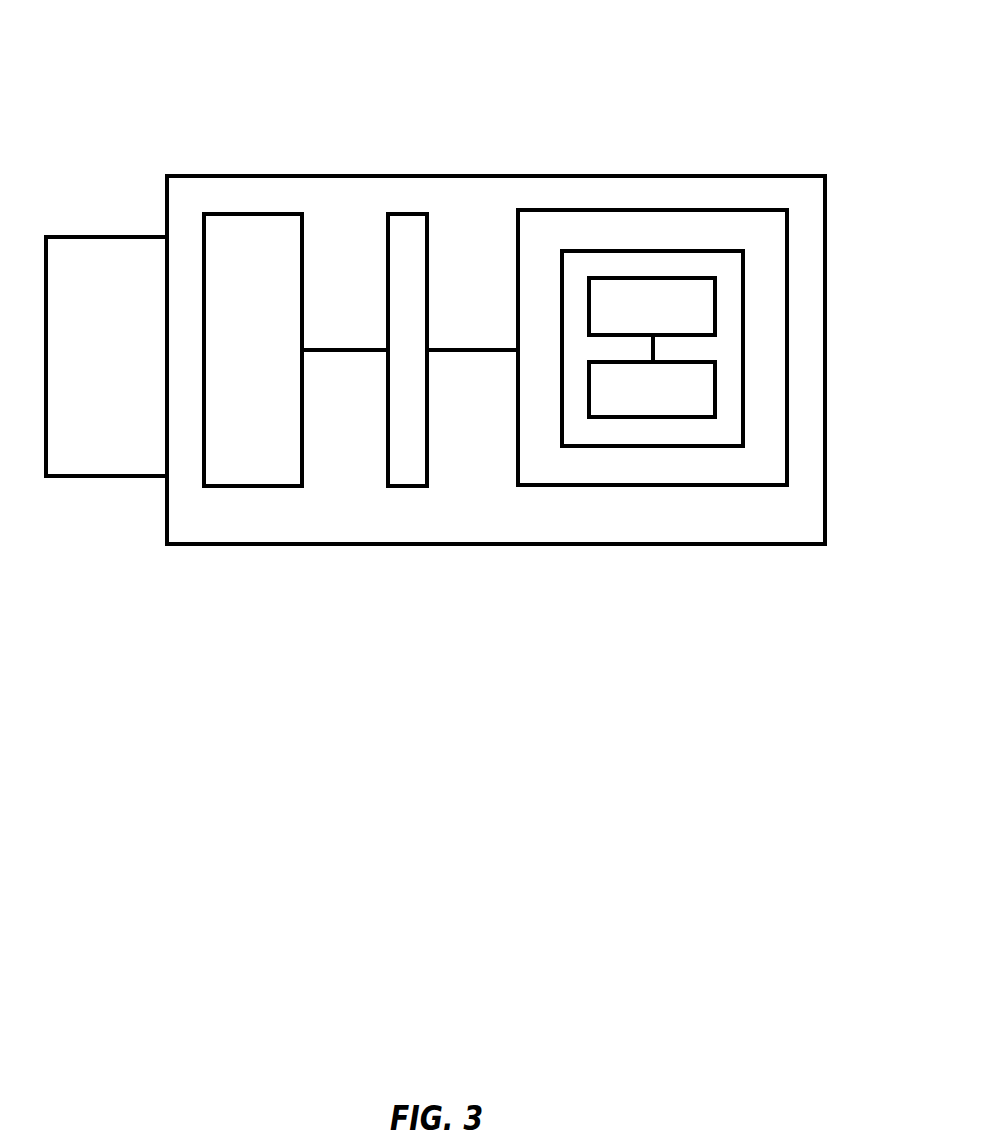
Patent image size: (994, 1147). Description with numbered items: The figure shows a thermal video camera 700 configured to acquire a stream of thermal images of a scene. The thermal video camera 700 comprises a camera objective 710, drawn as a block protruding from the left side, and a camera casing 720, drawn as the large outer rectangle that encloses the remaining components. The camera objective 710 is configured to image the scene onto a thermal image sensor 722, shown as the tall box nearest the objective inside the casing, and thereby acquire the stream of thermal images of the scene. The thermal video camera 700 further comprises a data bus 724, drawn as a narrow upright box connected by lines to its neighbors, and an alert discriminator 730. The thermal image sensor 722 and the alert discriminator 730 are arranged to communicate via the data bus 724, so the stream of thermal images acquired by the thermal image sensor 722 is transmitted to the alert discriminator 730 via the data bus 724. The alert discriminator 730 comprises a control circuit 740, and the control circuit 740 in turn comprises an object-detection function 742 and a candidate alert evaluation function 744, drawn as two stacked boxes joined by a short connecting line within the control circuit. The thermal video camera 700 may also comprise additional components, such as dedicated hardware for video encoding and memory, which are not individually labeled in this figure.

The thermal video camera 700 is at (153, 80).
The camera objective 710 is at (132, 441).
The camera casing 720 is at (489, 190).
The thermal image sensor 722 is at (257, 455).
The data bus 724 is at (408, 453).
The alert discriminator 730 is at (652, 432).
The control circuit 740 is at (547, 460).
The object-detection function 742 is at (670, 298).
The candidate alert evaluation function 744 is at (690, 392).